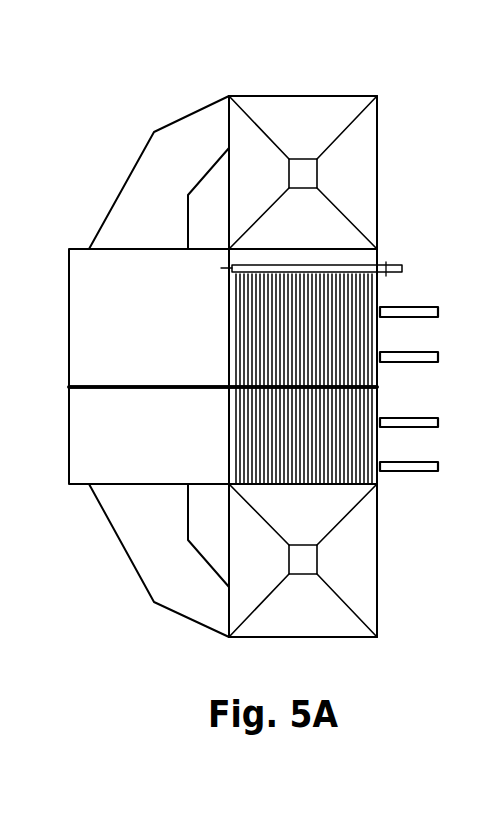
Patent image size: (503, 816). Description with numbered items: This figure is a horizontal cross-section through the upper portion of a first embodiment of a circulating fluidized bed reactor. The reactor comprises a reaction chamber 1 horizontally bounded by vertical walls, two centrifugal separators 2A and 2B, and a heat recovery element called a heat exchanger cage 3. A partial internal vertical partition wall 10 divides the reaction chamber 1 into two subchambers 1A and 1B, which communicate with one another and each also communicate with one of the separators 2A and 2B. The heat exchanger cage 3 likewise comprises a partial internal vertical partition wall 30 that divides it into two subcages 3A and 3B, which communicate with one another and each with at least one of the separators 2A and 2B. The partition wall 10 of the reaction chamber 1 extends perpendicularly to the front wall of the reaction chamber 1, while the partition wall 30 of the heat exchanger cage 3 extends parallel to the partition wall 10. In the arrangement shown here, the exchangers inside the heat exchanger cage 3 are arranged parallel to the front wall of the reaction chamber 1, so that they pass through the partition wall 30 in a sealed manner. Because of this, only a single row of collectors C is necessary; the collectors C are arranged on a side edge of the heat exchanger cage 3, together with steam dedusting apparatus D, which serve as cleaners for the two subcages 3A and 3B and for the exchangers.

The reaction chamber 1 is at (68, 320).
The subchamber 1A is at (118, 270).
The subchamber 1B is at (123, 473).
The centrifugal separator 2A is at (327, 118).
The centrifugal separator 2B is at (358, 591).
The heat exchanger cage 3 is at (379, 335).
The subcage 3A is at (343, 295).
The subcage 3B is at (312, 458).
The partition wall 30 is at (360, 385).
The partition wall 10 is at (96, 389).
The collectors C is at (325, 270).
The steam dedusting apparatus D is at (437, 313).